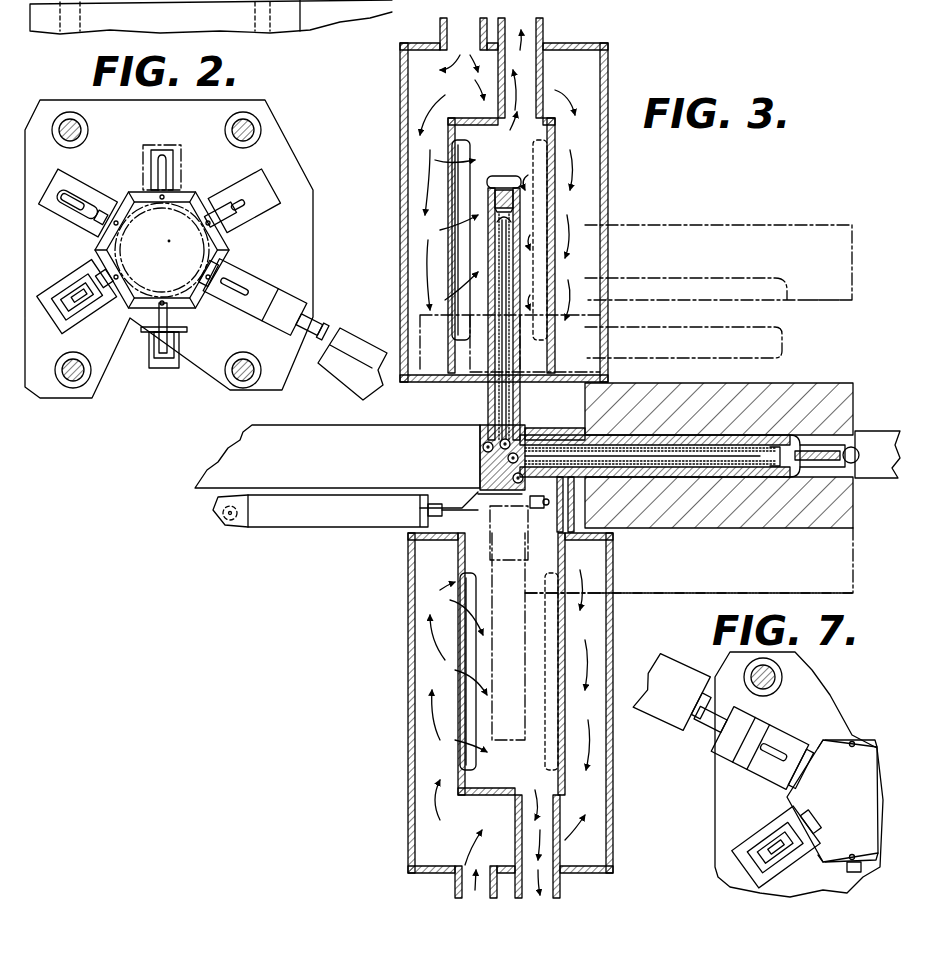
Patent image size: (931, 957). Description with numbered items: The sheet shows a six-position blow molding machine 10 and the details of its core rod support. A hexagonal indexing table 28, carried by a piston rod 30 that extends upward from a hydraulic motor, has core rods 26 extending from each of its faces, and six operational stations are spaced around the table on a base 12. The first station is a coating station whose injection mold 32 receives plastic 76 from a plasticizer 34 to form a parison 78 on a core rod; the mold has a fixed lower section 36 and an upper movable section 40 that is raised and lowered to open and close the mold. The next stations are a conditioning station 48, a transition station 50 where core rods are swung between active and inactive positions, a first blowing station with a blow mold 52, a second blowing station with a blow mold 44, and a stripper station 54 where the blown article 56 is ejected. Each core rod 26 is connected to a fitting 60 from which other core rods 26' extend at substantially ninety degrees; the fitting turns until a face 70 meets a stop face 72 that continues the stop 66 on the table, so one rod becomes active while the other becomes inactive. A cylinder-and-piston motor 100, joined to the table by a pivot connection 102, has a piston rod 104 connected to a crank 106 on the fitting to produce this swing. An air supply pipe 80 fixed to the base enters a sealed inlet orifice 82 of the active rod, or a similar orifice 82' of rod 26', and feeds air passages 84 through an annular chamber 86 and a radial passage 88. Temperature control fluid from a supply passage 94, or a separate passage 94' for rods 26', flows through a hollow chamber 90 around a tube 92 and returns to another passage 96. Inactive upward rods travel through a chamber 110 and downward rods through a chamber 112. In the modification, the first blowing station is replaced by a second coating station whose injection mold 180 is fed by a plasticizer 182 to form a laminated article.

In FIG. 2, the molding machine 10 is at (296, 138).
In FIG. 2, the base 12 is at (298, 242).
In FIG. 3, the base 12 is at (625, 593).
In FIG. 7, the base 12 is at (718, 792).
In FIG. 2, the core rods 26 is at (185, 250).
In FIG. 3, the core rods 26 is at (662, 546).
In FIG. 3, the core rods 26' is at (503, 289).
In FIG. 2, the indexing table 28 is at (161, 190).
In FIG. 3, the indexing table 28 is at (383, 433).
In FIG. 7, the indexing table 28 is at (866, 745).
In FIG. 2, the piston rod 30 is at (300, 12).
In FIG. 2, the injection mold 32 is at (250, 278).
In FIG. 2, the plasticizer 34 is at (350, 333).
In FIG. 3, the plasticizer 34 is at (878, 470).
In FIG. 3, the fixed lower section 36 is at (845, 525).
In FIG. 3, the upper movable section 40 is at (849, 260).
In FIG. 2, the blow mold 44 is at (68, 288).
In FIG. 7, the blow mold 44 is at (766, 826).
In FIG. 2, the conditioning station 48 is at (236, 186).
In FIG. 2, the transition station 50 is at (182, 158).
In FIG. 2, the blow mold 52 is at (80, 190).
In FIG. 2, the stripper station 54 is at (148, 345).
In FIG. 2, the article 56 is at (85, 312).
In FIG. 3, the fitting 60 is at (534, 512).
In FIG. 3, the stop 66 is at (480, 425).
In FIG. 3, the face 70 is at (465, 535).
In FIG. 3, the stop face 72 is at (476, 478).
In FIG. 3, the plastic 76 is at (808, 452).
In FIG. 3, the parison 78 is at (705, 448).
In FIG. 3, the air supply pipe 80 is at (574, 515).
In FIG. 3, the sealed inlet orifice 82 is at (595, 504).
In FIG. 3, the orifice 82' is at (545, 393).
In FIG. 3, the air passages 84 is at (745, 444).
In FIG. 3, the annular chamber 86 is at (612, 436).
In FIG. 3, the radial passage 88 is at (574, 488).
In FIG. 3, the hollow chamber 90 is at (680, 444).
In FIG. 3, the tube 92 is at (648, 446).
In FIG. 3, the supply passage 94 is at (458, 471).
In FIG. 3, the supply passage 94' is at (463, 437).
In FIG. 3, the passage 96 is at (565, 434).
In FIG. 3, the cylinder-and-piston motor 100 is at (345, 506).
In FIG. 3, the pivot connection 102 is at (232, 508).
In FIG. 3, the piston rod 104 is at (470, 508).
In FIG. 3, the crank 106 is at (540, 515).
In FIG. 3, the chamber 110 is at (605, 102).
In FIG. 3, the chamber 112 is at (612, 758).
In FIG. 7, the injection mold 180 is at (775, 725).
In FIG. 7, the plasticizer 182 is at (672, 662).